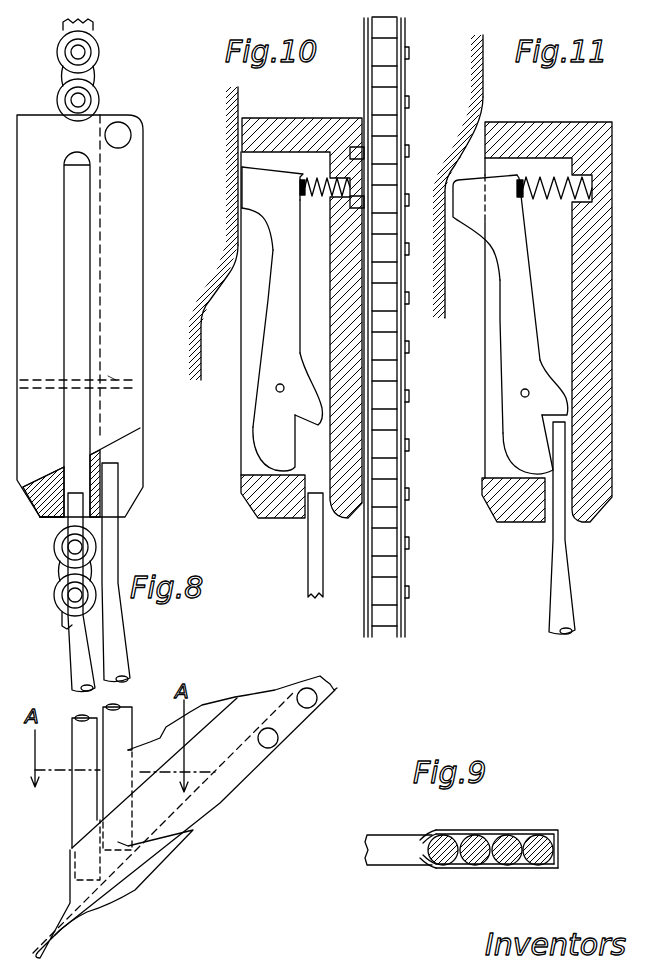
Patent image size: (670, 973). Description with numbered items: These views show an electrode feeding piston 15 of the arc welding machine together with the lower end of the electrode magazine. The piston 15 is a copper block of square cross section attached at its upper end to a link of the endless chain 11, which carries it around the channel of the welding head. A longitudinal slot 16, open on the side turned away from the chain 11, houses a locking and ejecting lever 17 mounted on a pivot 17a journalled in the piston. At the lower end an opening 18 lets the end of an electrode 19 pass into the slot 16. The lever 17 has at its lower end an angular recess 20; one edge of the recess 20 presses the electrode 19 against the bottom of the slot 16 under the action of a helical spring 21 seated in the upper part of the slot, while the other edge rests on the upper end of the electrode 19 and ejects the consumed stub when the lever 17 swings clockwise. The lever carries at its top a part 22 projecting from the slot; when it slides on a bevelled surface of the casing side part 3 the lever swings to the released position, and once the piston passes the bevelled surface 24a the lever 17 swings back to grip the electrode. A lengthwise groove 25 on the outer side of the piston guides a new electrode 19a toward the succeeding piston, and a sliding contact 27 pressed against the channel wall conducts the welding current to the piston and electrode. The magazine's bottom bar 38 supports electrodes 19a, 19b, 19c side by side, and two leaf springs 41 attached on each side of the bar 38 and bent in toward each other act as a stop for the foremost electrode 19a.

In FIG. 10, the side part of the casing 3 is at (238, 92).
In FIG. 11, the side part of the casing 3 is at (478, 72).
In FIG. 8, the endless chain 11 is at (55, 598).
In FIG. 10, the endless chain 11 is at (388, 607).
In FIG. 8, the electrode holder or piston 15 is at (98, 207).
In FIG. 10, the electrode holder or piston 15 is at (262, 133).
In FIG. 11, the electrode holder or piston 15 is at (585, 143).
In FIG. 8, the longitudinal slot 16 is at (73, 277).
In FIG. 10, the longitudinal slot 16 is at (255, 250).
In FIG. 11, the longitudinal slot 16 is at (548, 275).
In FIG. 10, the locking and ejecting lever 17 is at (280, 355).
In FIG. 11, the locking and ejecting lever 17 is at (520, 340).
In FIG. 8, the pivot 17a is at (112, 378).
In FIG. 10, the pivot 17a is at (276, 390).
In FIG. 11, the pivot 17a is at (518, 392).
In FIG. 8, the opening 18 is at (52, 520).
In FIG. 10, the opening 18 is at (292, 512).
In FIG. 11, the opening 18 is at (540, 512).
In FIG. 8, the electrode 19 is at (78, 668).
In FIG. 10, the electrode 19 is at (308, 548).
In FIG. 11, the electrode 19 is at (565, 607).
In FIG. 8, the new electrode 19a is at (122, 650).
In FIG. 9, the new electrode 19a is at (428, 866).
In FIG. 9, the electrode 19b is at (500, 872).
In FIG. 9, the electrode 19c is at (535, 835).
In FIG. 10, the angular recess 20 is at (295, 437).
In FIG. 11, the angular recess 20 is at (545, 442).
In FIG. 10, the helical spring 21 is at (322, 198).
In FIG. 11, the helical spring 21 is at (545, 200).
In FIG. 10, the projecting part of the lever 22 is at (257, 191).
In FIG. 11, the projecting part of the lever 22 is at (478, 215).
In FIG. 10, the bevelled surface 24a is at (220, 293).
In FIG. 11, the bevelled surface 24a is at (465, 147).
In FIG. 8, the lengthwise groove 25 is at (125, 457).
In FIG. 8, the sliding contact 27 is at (130, 133).
In FIG. 8, the bottom bar 38 is at (130, 870).
In FIG. 9, the bottom bar 38 is at (400, 843).
In FIG. 8, the leaf springs 41 is at (205, 760).
In FIG. 9, the leaf springs 41 is at (478, 832).